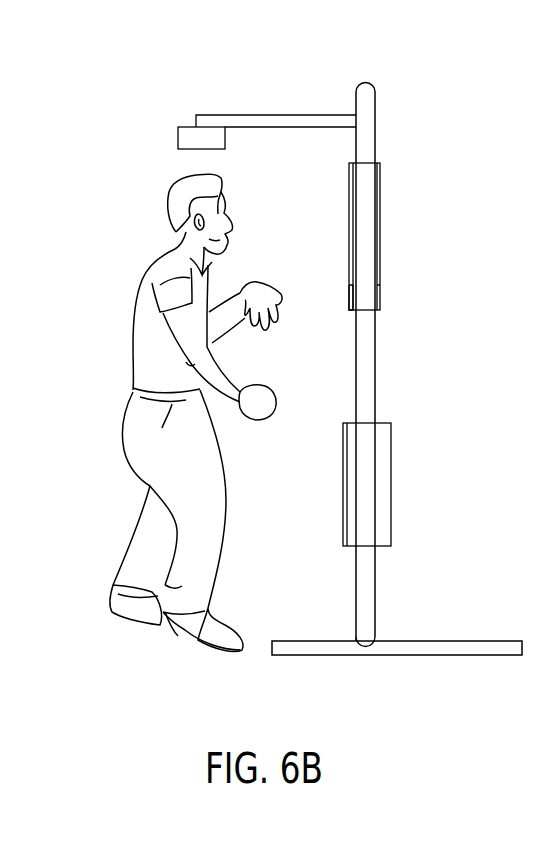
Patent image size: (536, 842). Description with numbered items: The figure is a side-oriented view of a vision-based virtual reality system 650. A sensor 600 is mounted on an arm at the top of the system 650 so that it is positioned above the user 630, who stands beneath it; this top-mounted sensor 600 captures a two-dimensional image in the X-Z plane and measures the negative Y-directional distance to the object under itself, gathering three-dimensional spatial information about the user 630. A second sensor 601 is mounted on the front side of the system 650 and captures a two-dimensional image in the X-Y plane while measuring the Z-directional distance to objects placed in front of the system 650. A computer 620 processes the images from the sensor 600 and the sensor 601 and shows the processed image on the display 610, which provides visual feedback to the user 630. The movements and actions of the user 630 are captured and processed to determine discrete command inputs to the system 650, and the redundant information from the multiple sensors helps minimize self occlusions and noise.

The vision-based virtual reality system 650 is at (366, 59).
The sensor 600 is at (182, 136).
The display 610 is at (380, 236).
The sensor 601 is at (349, 296).
The computer 620 is at (391, 461).
The user 630 is at (140, 322).